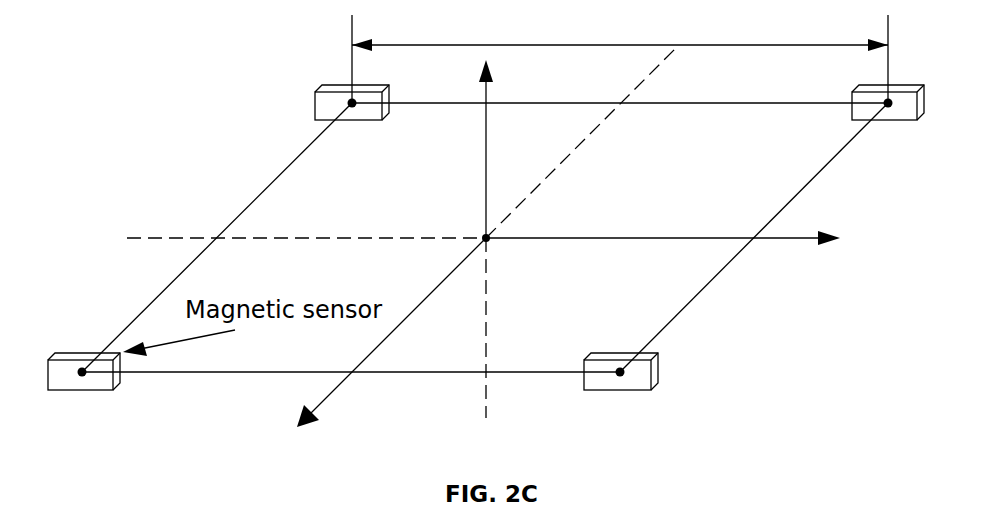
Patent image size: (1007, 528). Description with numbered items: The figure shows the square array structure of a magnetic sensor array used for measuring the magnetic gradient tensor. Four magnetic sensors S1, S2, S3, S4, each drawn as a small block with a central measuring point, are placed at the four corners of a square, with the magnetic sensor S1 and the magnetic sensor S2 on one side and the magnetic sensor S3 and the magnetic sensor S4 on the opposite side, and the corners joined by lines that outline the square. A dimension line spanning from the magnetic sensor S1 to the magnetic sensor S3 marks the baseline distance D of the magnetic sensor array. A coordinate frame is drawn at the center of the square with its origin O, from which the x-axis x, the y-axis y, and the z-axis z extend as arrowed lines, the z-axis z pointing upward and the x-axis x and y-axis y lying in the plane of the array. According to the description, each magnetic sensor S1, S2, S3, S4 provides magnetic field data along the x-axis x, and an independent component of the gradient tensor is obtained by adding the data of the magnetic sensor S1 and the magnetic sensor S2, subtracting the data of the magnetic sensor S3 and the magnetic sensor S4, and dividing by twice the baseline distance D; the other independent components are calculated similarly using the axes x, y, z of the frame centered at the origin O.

The magnetic sensor S1 is at (352, 131).
The magnetic sensor S2 is at (84, 398).
The magnetic sensor S3 is at (888, 131).
The magnetic sensor S4 is at (621, 398).
The baseline distance D is at (620, 54).
The coordinate origin O is at (474, 222).
The x-axis x is at (488, 245).
The y-axis y is at (499, 240).
The z-axis z is at (474, 239).